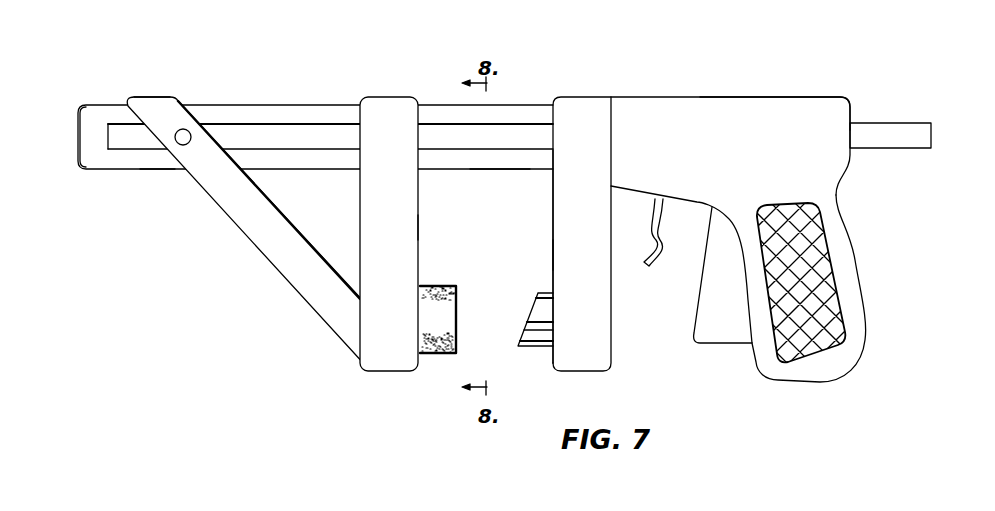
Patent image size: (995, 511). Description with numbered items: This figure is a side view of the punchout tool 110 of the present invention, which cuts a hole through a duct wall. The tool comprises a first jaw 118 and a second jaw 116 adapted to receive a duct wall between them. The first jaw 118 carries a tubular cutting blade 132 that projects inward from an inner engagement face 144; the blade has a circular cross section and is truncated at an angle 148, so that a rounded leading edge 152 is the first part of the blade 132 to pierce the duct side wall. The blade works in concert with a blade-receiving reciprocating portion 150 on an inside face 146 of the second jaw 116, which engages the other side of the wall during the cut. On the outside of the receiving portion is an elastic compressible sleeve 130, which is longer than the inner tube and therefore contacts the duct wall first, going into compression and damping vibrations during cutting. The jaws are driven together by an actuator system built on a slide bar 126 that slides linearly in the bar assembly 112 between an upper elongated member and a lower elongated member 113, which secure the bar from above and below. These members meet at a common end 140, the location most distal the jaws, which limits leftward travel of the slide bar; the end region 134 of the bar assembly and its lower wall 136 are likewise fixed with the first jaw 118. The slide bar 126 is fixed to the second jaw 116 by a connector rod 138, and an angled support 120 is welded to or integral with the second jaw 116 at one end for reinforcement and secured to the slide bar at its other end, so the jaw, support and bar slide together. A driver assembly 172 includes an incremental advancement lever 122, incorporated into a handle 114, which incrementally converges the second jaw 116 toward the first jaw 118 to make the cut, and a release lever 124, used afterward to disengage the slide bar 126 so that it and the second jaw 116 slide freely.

The tool / dispenser body 110 is at (605, 75).
The elongated bar 112 is at (228, 104).
The lower elongated member 113 is at (487, 168).
The handle 114 is at (862, 318).
The second jaw 116 is at (405, 254).
The first jaw 118 is at (598, 312).
The angled support 120 is at (277, 260).
The incremental advancement lever 122 is at (715, 343).
The release lever 124 is at (658, 208).
The slide bar 126 is at (316, 128).
The elastic compressible sleeve 130 is at (456, 305).
The tubular cutting blade 132 is at (535, 342).
The arm upper end 134 is at (147, 97).
The bar bottom wall 136 is at (158, 163).
The connector rod 138 is at (389, 128).
The common end 140 is at (93, 152).
The inner engagement face 144 is at (553, 255).
The inside face 146 is at (419, 228).
The angle 148 is at (527, 320).
The blade-receiving reciprocating portion 150 is at (437, 358).
The rounded leading edge 152 is at (520, 335).
The driver assembly 172 is at (752, 97).